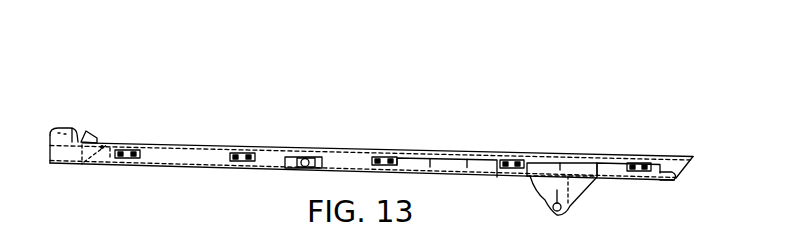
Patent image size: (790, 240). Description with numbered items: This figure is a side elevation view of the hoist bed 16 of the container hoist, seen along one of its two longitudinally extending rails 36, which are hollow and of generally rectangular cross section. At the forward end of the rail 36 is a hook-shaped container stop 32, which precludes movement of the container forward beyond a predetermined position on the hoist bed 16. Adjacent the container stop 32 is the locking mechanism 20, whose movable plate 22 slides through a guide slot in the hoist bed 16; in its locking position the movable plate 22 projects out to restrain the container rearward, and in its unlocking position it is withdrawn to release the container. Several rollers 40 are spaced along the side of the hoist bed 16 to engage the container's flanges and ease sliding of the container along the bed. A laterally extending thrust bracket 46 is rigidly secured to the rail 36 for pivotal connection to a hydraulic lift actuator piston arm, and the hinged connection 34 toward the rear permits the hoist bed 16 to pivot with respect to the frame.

The hoist bed 16 is at (541, 149).
The locking mechanism 20 is at (391, 121).
The movable plate 22 is at (86, 137).
The container stop 32 is at (77, 128).
The hinged connection 34 is at (578, 193).
The rail 36 is at (187, 163).
The roller 40 is at (129, 150).
The thrust bracket 46 is at (300, 168).